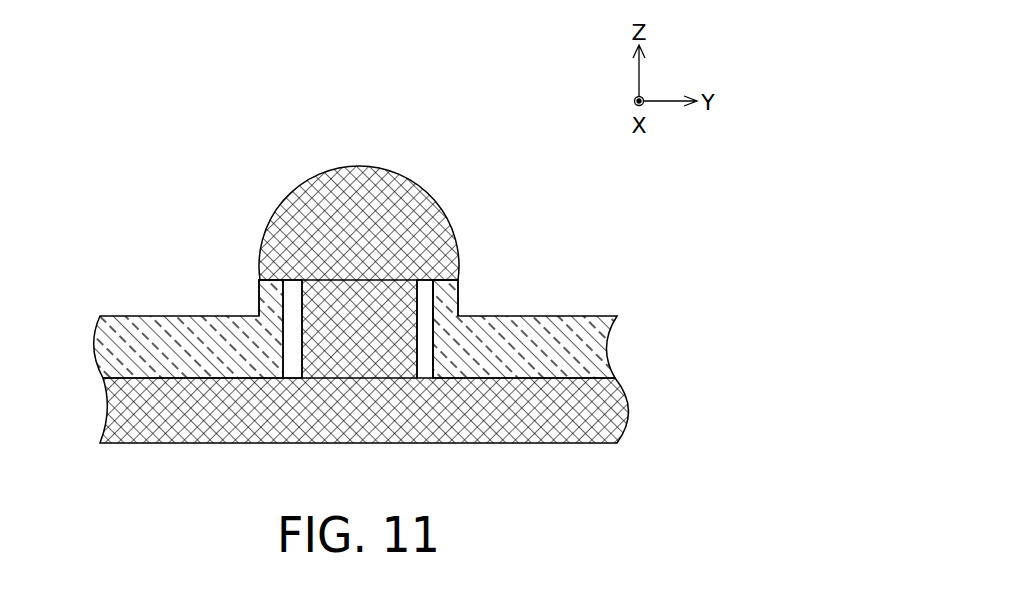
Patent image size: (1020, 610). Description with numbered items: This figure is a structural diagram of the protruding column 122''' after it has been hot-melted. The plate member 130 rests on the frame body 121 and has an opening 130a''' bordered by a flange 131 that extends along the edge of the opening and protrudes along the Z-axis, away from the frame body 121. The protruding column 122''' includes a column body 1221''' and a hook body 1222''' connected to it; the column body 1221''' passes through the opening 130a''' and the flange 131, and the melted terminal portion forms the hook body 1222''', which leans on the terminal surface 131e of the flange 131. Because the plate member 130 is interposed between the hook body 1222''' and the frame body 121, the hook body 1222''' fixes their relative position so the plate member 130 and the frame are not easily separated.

The frame body 121 is at (138, 417).
The plate member 130 is at (142, 340).
The flange 131 is at (270, 298).
The terminal surface of the flange 131e is at (275, 250).
The opening 130a''' is at (313, 385).
The protruding column 122''' is at (449, 272).
The column body 1221''' is at (434, 319).
The hook body 1222''' is at (413, 223).